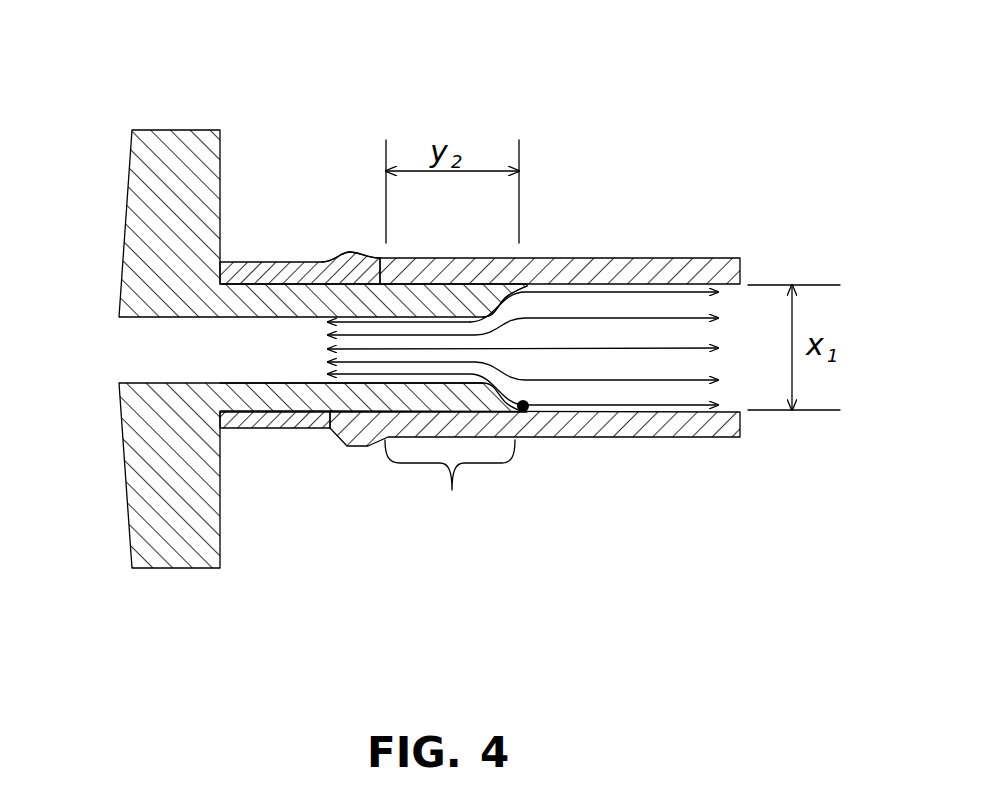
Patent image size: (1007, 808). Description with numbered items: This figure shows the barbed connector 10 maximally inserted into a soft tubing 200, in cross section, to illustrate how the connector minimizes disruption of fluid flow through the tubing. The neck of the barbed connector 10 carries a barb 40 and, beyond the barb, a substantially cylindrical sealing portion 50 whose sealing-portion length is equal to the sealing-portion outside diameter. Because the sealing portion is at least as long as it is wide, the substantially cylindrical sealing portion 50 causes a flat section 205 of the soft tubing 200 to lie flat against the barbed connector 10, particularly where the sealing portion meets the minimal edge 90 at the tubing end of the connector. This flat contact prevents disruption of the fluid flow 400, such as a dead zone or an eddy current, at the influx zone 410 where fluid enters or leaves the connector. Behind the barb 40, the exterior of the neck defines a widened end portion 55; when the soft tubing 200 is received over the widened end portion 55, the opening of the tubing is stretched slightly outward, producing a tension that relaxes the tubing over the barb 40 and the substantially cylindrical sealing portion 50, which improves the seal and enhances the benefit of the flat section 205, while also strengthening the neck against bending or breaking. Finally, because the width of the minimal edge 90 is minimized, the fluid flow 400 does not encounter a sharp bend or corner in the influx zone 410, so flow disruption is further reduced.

The barbed connector 10 is at (146, 121).
The barb 40 is at (358, 290).
The substantially cylindrical sealing portion 50 is at (413, 397).
The widened end portion 55 is at (273, 282).
The minimal edge 90 is at (523, 285).
The soft tubing 200 is at (618, 258).
The flat section 205 is at (452, 490).
The fluid flow 400 is at (670, 348).
The influx zone 410 is at (528, 411).